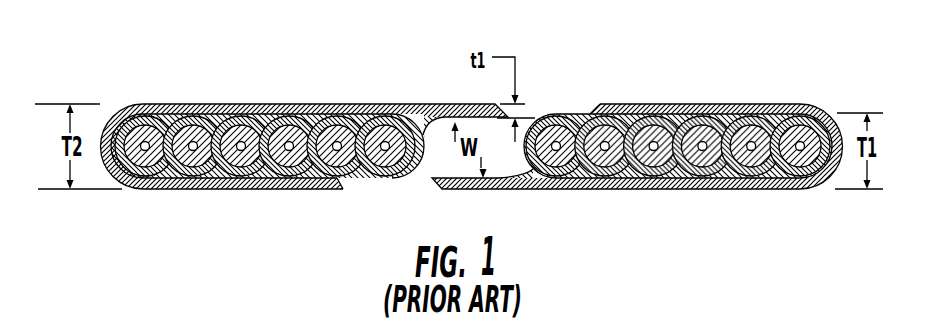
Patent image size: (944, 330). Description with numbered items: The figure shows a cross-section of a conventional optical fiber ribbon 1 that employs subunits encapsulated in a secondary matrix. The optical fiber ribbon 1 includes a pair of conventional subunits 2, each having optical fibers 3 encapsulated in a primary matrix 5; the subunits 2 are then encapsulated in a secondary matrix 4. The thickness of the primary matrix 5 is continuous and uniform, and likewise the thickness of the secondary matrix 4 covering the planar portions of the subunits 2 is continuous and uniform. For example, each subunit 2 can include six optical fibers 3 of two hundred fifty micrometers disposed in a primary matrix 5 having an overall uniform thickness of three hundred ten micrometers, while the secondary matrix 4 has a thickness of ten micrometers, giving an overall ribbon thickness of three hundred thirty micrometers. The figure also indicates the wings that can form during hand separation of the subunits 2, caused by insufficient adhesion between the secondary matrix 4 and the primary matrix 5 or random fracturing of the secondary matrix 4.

The optical fiber ribbon 1 is at (462, 103).
The subunit 2 is at (462, 104).
The optical fiber 3 is at (126, 117).
The secondary matrix 4 is at (347, 105).
The primary matrix 5 is at (213, 108).